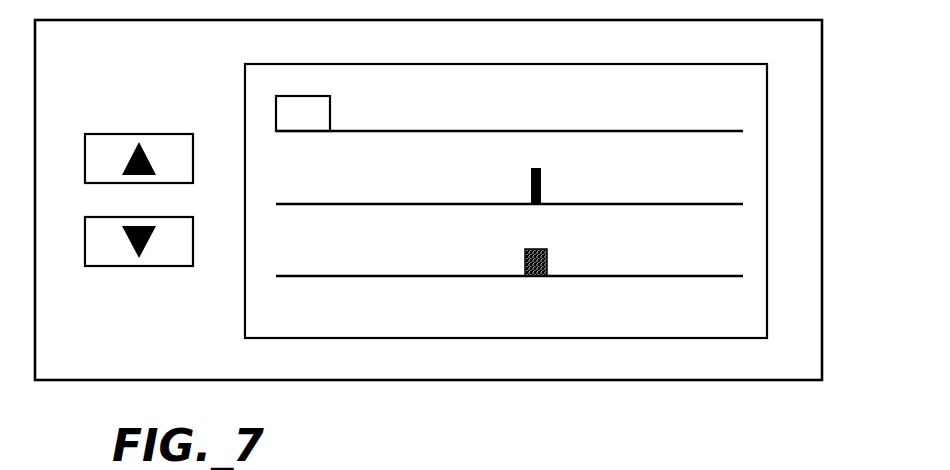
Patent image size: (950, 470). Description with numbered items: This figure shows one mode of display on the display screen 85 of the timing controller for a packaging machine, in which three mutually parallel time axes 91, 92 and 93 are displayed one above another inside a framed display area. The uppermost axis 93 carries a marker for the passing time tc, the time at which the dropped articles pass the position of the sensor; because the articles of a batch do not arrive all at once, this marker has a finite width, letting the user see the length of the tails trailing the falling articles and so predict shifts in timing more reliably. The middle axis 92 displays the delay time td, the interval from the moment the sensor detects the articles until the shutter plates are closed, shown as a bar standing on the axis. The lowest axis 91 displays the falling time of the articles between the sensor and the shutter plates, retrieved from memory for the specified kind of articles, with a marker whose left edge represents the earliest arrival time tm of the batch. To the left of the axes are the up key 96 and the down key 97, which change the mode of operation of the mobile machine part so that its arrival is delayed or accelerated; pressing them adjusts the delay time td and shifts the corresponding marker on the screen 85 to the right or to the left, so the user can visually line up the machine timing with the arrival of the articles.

The display screen 85 is at (767, 178).
The up key 96 is at (120, 134).
The down key 97 is at (105, 266).
The time axis 93 is at (653, 131).
The time axis 92 is at (653, 204).
The time axis 91 is at (653, 276).
The passing time tc is at (330, 119).
The delay time td is at (531, 190).
The earliest arrival time tm is at (549, 281).